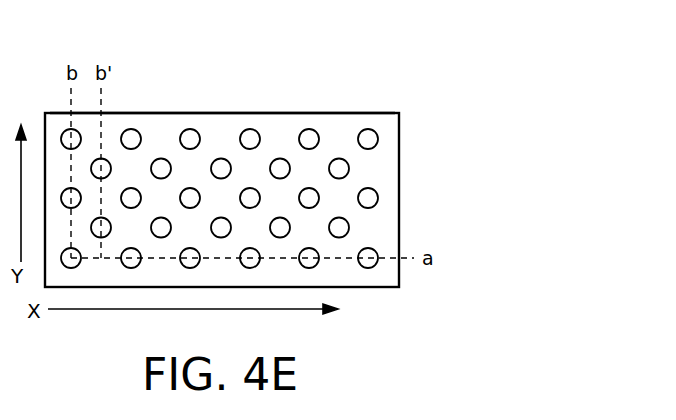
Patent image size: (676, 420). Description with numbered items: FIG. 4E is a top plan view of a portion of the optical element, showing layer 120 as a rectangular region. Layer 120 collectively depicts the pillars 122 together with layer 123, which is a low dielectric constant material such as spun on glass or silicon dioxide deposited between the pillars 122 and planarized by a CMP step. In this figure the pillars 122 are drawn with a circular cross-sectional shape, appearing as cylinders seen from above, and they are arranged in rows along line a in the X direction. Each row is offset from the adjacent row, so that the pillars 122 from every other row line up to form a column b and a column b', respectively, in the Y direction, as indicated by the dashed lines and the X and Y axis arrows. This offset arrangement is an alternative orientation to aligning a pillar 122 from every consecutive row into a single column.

The layer 120 is at (495, 108).
The pillar 122 is at (370, 139).
The layer 123 is at (353, 123).